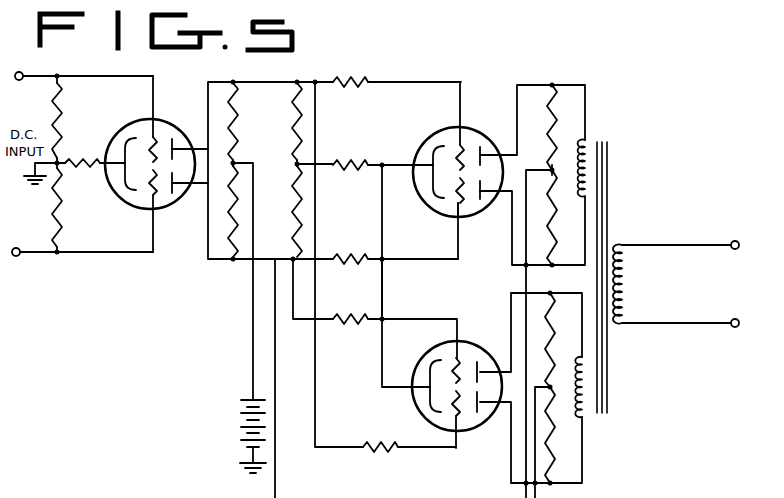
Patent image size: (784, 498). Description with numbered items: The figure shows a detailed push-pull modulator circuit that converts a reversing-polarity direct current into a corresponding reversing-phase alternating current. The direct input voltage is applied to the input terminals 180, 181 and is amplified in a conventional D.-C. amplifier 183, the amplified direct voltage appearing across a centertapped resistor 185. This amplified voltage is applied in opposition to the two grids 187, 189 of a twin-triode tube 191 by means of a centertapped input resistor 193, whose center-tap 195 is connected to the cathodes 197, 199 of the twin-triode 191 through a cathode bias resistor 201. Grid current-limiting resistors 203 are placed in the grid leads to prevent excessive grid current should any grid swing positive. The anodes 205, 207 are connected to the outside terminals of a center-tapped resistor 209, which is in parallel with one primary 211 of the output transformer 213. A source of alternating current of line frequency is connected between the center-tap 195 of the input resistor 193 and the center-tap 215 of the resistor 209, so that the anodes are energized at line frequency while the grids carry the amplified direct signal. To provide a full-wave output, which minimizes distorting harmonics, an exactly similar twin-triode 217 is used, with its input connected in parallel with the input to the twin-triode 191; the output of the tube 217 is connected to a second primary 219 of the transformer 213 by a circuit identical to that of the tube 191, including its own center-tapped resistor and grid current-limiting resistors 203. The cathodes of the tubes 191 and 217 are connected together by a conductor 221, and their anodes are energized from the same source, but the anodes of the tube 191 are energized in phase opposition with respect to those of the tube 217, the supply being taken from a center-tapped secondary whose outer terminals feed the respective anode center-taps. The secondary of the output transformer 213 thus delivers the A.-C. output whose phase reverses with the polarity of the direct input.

The input terminal 180 is at (22, 72).
The input terminal 181 is at (19, 256).
The D.-C. amplifier 183 is at (128, 206).
The centertapped resistor 185 is at (237, 138).
The centertapped input resistor 193 is at (302, 143).
The center-tap 195 is at (296, 167).
The cathode bias resistor 201 is at (358, 173).
The grid current-limiting resistor 203 is at (352, 76).
The conductor 221 is at (384, 289).
The twin-triode tube 191 is at (447, 128).
The grid 187 is at (470, 129).
The anode 205 is at (487, 147).
The anode 207 is at (470, 206).
The cathode 197 is at (424, 158).
The cathode 199 is at (432, 192).
The grid 189 is at (464, 207).
The center-tapped resistor 209 is at (561, 124).
The center-tap 215 is at (550, 169).
The primary 211 is at (587, 144).
The second primary 219 is at (581, 413).
The output transformer 213 is at (612, 240).
The twin-triode 217 is at (464, 344).